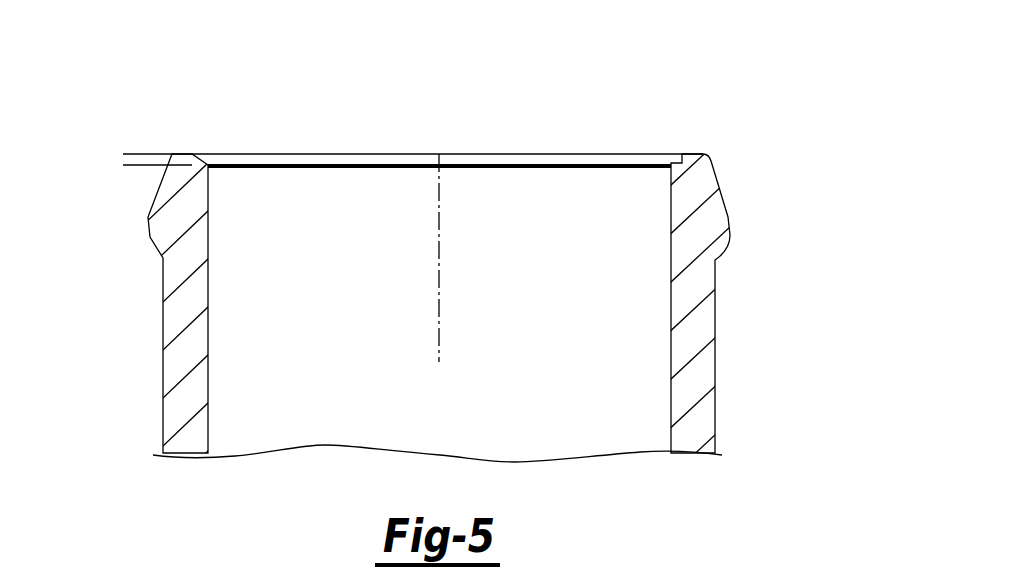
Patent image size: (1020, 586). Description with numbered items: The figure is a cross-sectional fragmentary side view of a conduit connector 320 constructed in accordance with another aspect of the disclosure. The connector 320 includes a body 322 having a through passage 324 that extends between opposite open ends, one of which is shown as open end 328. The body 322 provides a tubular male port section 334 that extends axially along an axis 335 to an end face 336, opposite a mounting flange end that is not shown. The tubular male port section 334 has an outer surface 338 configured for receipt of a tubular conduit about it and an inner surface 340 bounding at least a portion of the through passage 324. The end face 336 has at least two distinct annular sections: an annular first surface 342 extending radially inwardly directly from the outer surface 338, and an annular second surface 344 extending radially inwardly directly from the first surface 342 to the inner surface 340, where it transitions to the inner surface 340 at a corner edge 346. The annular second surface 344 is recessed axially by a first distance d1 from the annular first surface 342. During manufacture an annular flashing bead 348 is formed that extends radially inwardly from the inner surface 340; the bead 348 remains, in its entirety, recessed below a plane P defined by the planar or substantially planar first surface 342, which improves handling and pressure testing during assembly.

The connector 320 is at (750, 189).
The body 322 is at (715, 298).
The through passage 324 is at (473, 205).
The open end 328 is at (696, 153).
The tubular male port section 334 is at (152, 329).
The axis 335 is at (439, 322).
The end face 336 is at (680, 140).
The outer surface 338 is at (729, 407).
The inner surface 340 is at (658, 407).
The annular first surface 342 is at (184, 141).
The annular second surface 344 is at (207, 152).
The corner edge 346 is at (209, 168).
The bead 348 is at (370, 164).
The plane P is at (149, 153).
The first distance d1 is at (129, 165).